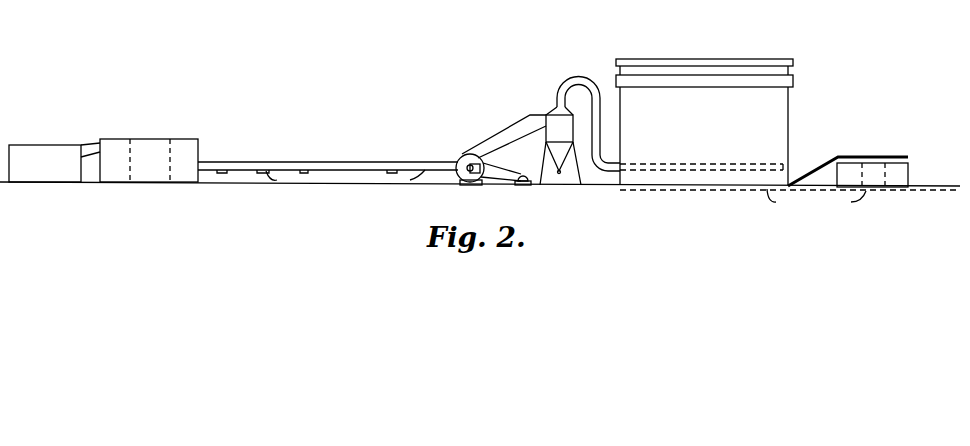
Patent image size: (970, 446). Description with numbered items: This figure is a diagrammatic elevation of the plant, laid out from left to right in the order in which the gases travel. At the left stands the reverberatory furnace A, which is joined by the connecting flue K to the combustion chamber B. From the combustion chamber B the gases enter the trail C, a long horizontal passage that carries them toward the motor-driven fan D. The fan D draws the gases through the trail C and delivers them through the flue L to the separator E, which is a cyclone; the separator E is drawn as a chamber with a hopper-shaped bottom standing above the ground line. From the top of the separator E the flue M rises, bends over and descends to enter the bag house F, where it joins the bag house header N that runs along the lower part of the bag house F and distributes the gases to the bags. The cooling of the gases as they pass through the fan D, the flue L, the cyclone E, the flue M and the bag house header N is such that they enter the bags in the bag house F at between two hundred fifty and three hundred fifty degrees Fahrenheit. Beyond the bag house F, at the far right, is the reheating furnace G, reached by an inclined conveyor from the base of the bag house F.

The reverberatory furnace A is at (45, 163).
The combustion chamber B is at (149, 160).
The trail C is at (268, 162).
The fan D is at (463, 160).
The separator E is at (560, 146).
The bag house F is at (704, 122).
The reheating furnace G is at (837, 183).
The connecting flue K is at (92, 150).
The flue L is at (505, 128).
The flue M is at (573, 76).
The bag house header N is at (656, 166).